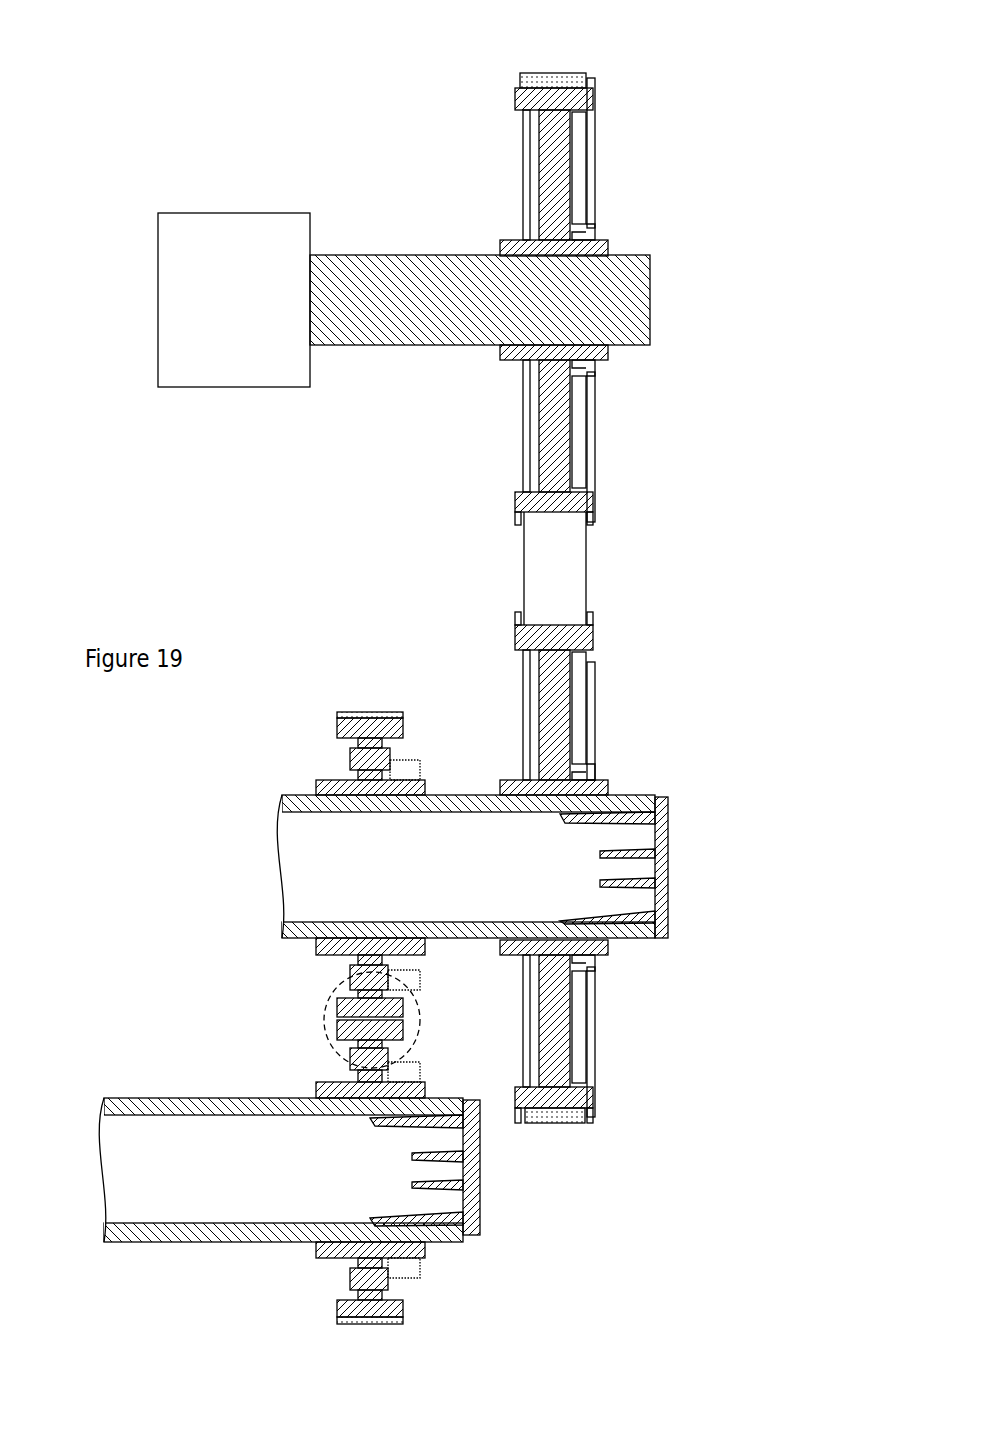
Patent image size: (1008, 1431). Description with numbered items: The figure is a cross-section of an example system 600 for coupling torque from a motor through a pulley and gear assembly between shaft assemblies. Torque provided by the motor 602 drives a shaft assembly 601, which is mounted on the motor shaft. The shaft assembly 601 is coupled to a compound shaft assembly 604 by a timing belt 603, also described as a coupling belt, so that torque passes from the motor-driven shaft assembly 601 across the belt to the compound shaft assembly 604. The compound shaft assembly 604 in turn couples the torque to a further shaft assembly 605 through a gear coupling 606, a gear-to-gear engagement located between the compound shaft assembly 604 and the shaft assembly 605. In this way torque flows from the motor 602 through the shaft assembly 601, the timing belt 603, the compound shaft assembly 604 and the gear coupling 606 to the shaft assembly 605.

The system for coupling torque 600 is at (225, 158).
The shaft assembly 601 is at (635, 160).
The motor 602 is at (215, 330).
The timing belt 603 is at (563, 64).
The compound shaft assembly 604 is at (635, 728).
The shaft assembly 605 is at (500, 1242).
The gear coupling 606 is at (322, 1020).